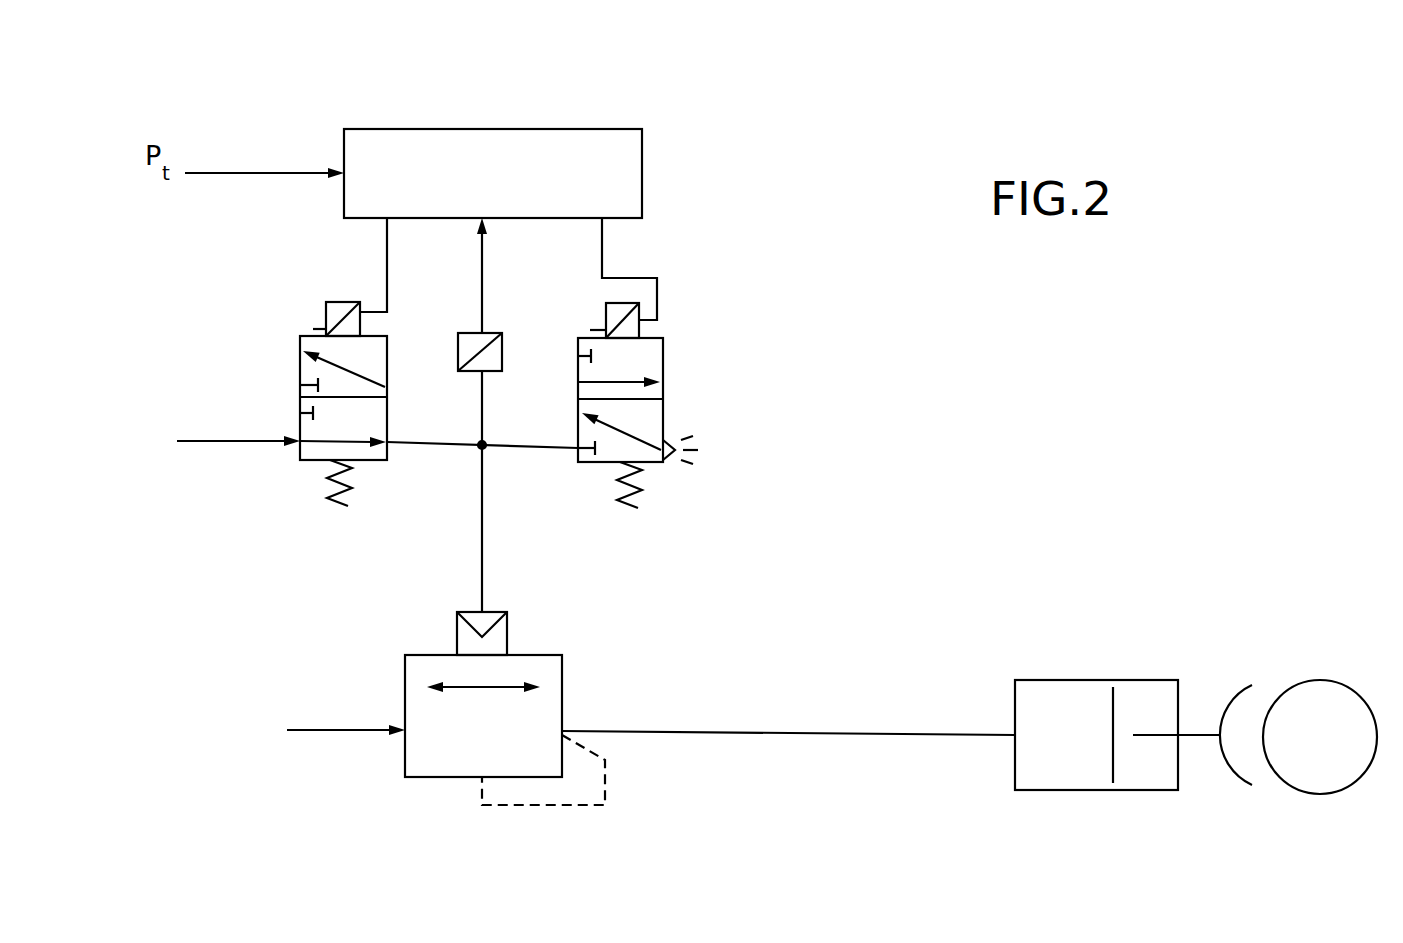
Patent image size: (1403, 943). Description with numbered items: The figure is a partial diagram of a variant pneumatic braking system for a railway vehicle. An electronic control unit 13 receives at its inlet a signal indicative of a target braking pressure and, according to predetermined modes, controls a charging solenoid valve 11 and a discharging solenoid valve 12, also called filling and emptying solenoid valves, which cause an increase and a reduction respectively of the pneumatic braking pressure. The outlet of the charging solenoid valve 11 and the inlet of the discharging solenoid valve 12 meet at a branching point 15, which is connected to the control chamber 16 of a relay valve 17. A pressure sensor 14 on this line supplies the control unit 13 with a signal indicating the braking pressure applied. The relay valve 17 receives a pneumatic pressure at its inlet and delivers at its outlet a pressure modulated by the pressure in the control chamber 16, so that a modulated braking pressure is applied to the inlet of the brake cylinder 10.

The brake cylinder 10 is at (1065, 680).
The charging solenoid valve 11 is at (300, 367).
The discharging solenoid valve 12 is at (663, 371).
The electronic control unit 13 is at (432, 129).
The pressure sensor 14 is at (502, 350).
The branching point 15 is at (466, 463).
The control chamber 16 is at (492, 612).
The relay valve 17 is at (405, 763).